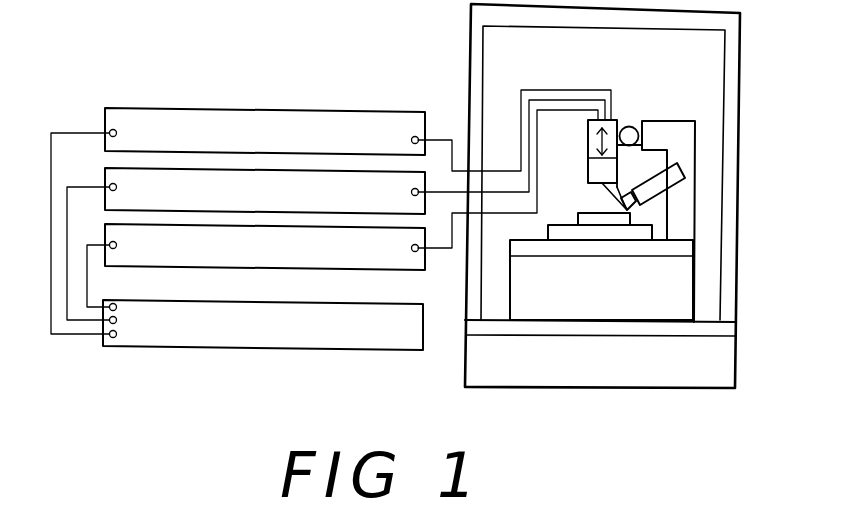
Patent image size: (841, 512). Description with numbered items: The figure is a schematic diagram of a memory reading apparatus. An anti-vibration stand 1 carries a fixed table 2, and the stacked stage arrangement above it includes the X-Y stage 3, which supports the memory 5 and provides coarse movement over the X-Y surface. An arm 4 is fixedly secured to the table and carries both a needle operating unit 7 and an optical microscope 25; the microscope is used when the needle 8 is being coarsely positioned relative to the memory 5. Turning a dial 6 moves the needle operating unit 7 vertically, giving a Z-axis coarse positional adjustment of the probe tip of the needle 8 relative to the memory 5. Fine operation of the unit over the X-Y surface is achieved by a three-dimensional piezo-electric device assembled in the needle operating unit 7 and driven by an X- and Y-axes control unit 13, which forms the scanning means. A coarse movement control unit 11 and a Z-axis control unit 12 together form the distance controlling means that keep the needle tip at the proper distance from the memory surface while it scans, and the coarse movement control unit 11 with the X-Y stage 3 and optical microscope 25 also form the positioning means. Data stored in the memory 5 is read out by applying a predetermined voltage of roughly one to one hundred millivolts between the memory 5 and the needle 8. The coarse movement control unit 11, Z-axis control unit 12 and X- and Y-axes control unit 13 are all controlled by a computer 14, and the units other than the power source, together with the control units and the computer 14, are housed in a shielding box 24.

The anti-vibration stand 1 is at (655, 307).
The fixed table 2 is at (672, 252).
The X-Y stage 3 is at (637, 236).
The arm 4 is at (680, 227).
The memory 5 is at (647, 220).
The dial 6 is at (628, 127).
The needle operating unit 7 is at (588, 133).
The needle 8 is at (603, 193).
The coarse movement control unit 11 is at (105, 110).
The Z-axis control unit 12 is at (103, 173).
The X- and Y-axes control unit 13 is at (150, 267).
The computer 14 is at (335, 300).
The shielding box 24 is at (471, 32).
The optical microscope 25 is at (678, 167).